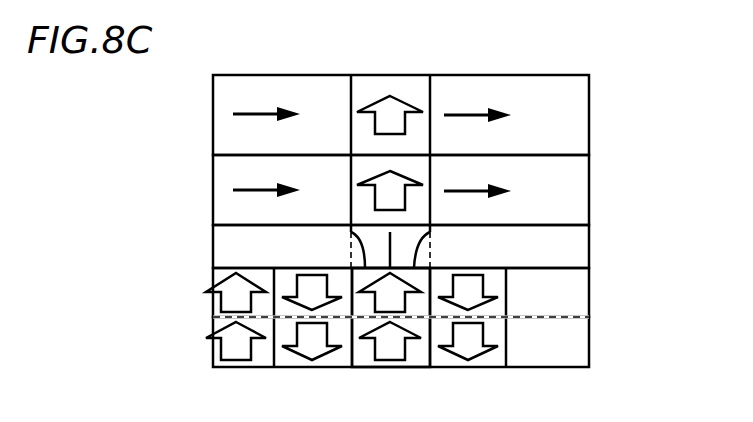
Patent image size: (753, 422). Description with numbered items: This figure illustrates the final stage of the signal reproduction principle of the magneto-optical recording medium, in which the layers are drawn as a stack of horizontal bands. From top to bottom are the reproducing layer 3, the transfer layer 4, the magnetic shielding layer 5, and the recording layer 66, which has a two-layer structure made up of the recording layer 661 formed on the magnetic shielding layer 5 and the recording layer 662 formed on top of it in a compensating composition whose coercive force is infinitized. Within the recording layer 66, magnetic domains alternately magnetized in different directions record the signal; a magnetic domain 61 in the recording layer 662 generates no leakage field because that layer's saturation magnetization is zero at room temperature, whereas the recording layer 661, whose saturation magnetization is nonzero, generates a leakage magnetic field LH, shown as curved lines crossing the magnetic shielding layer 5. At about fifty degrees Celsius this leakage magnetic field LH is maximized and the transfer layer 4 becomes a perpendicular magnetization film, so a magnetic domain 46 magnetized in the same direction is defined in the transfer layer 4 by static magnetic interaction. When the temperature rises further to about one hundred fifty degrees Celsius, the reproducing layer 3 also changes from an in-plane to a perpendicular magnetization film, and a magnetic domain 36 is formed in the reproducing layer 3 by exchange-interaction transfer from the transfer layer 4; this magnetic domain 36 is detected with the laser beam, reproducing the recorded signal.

The reproducing layer 3 is at (421, 94).
The transfer layer 4 is at (421, 129).
The magnetic shielding layer 5 is at (389, 243).
The magnetic domain 36 is at (418, 95).
The magnetic domain 46 is at (357, 168).
The leakage magnetic field LH is at (353, 239).
The magnetic domain 61 is at (419, 355).
The recording layer 66 is at (458, 341).
The recording layer 661 is at (582, 291).
The recording layer 662 is at (582, 342).